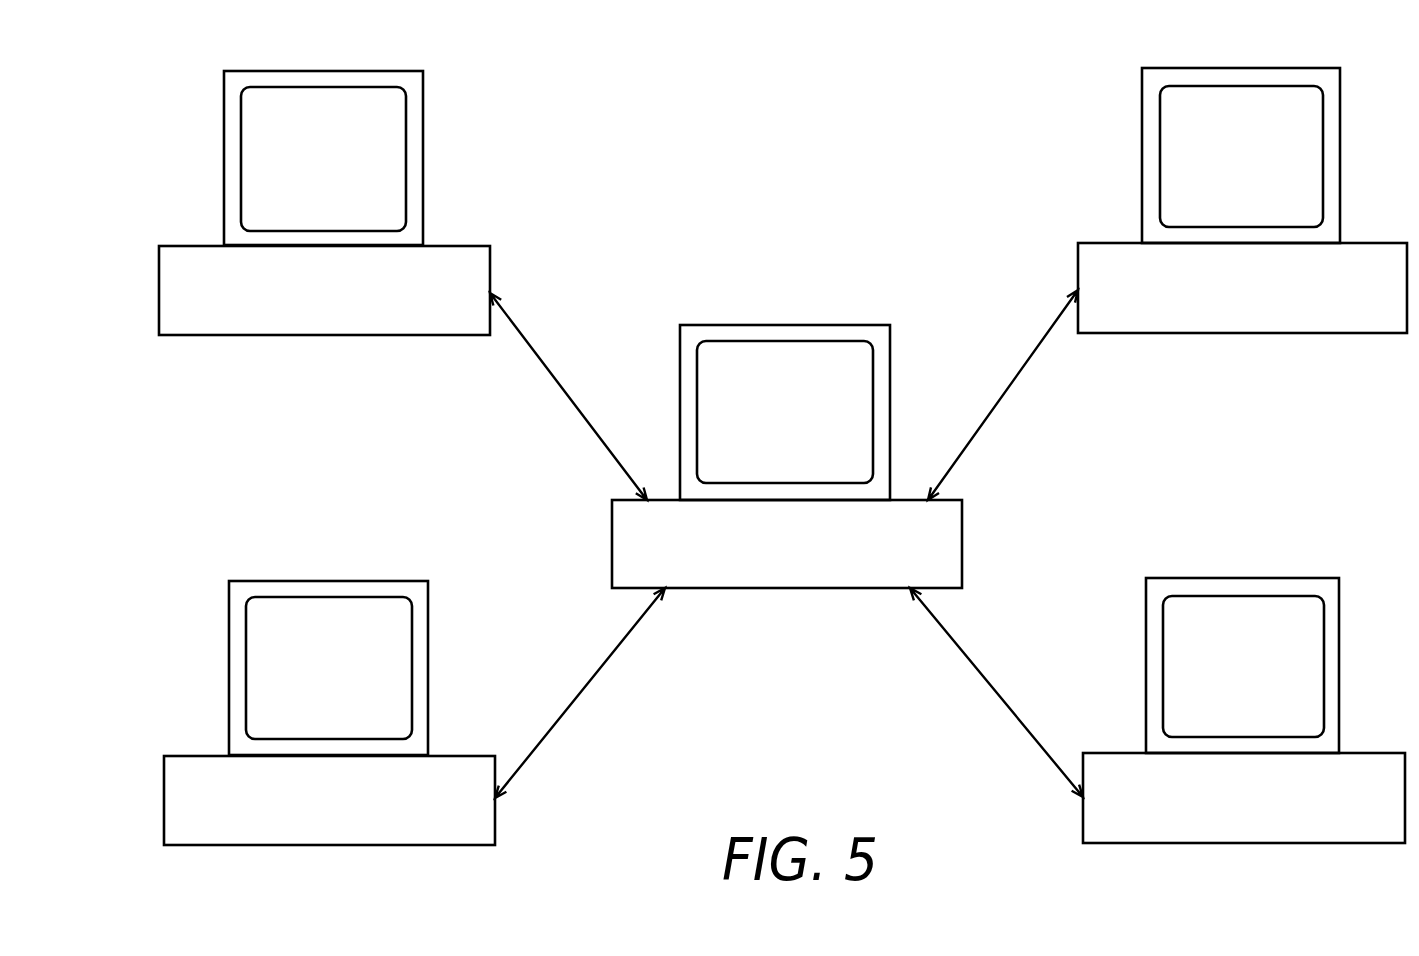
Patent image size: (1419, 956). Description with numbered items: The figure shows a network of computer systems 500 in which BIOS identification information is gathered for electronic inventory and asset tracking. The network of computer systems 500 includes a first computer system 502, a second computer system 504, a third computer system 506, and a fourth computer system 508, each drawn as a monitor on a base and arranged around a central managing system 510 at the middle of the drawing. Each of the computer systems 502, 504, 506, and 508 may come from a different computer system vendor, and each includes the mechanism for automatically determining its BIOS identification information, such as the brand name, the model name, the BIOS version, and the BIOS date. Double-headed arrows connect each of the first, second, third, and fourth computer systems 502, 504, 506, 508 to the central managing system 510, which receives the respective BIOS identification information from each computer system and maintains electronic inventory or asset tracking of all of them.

The network of computer systems 500 is at (867, 135).
The first computer system 502 is at (437, 136).
The second computer system 504 is at (1133, 147).
The third computer system 506 is at (441, 664).
The fourth computer system 508 is at (1135, 645).
The central managing system 510 is at (783, 316).